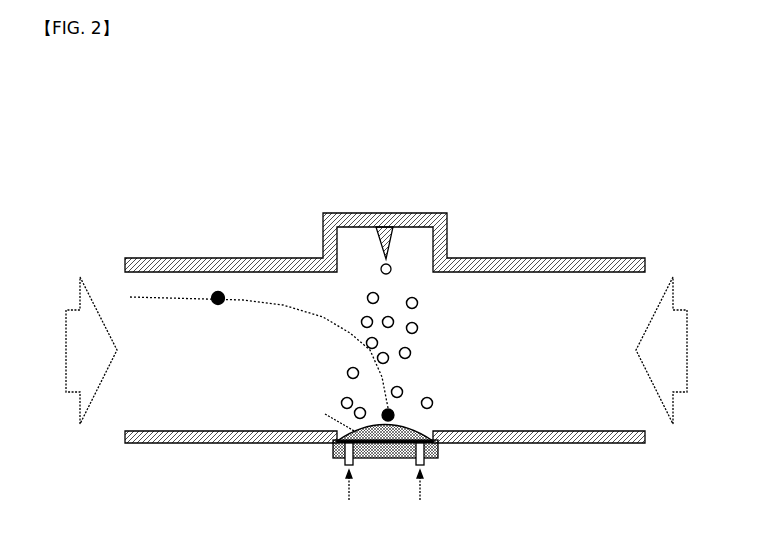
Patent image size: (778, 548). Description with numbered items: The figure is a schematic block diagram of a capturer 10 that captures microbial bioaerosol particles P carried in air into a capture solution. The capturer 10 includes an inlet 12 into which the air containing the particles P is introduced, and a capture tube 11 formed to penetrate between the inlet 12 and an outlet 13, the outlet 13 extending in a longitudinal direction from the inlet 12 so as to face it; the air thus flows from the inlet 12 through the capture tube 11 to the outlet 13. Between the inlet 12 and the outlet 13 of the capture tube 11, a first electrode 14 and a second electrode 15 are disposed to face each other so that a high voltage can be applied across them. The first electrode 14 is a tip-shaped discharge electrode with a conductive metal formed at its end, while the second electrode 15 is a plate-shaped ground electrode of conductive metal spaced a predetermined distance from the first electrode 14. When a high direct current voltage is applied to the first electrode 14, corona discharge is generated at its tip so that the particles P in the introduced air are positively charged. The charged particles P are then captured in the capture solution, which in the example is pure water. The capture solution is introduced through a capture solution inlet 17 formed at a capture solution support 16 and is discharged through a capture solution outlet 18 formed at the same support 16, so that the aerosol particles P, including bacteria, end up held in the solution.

The capturer 10 is at (396, 112).
The capture tube 11 is at (518, 258).
The inlet 12 is at (132, 272).
The outlet 13 is at (634, 272).
The first electrode 14 is at (387, 257).
The second electrode 15 is at (420, 433).
The capture solution support 16 is at (393, 451).
The capture solution inlet 17 is at (347, 461).
The capture solution outlet 18 is at (425, 461).
The particles P is at (417, 326).